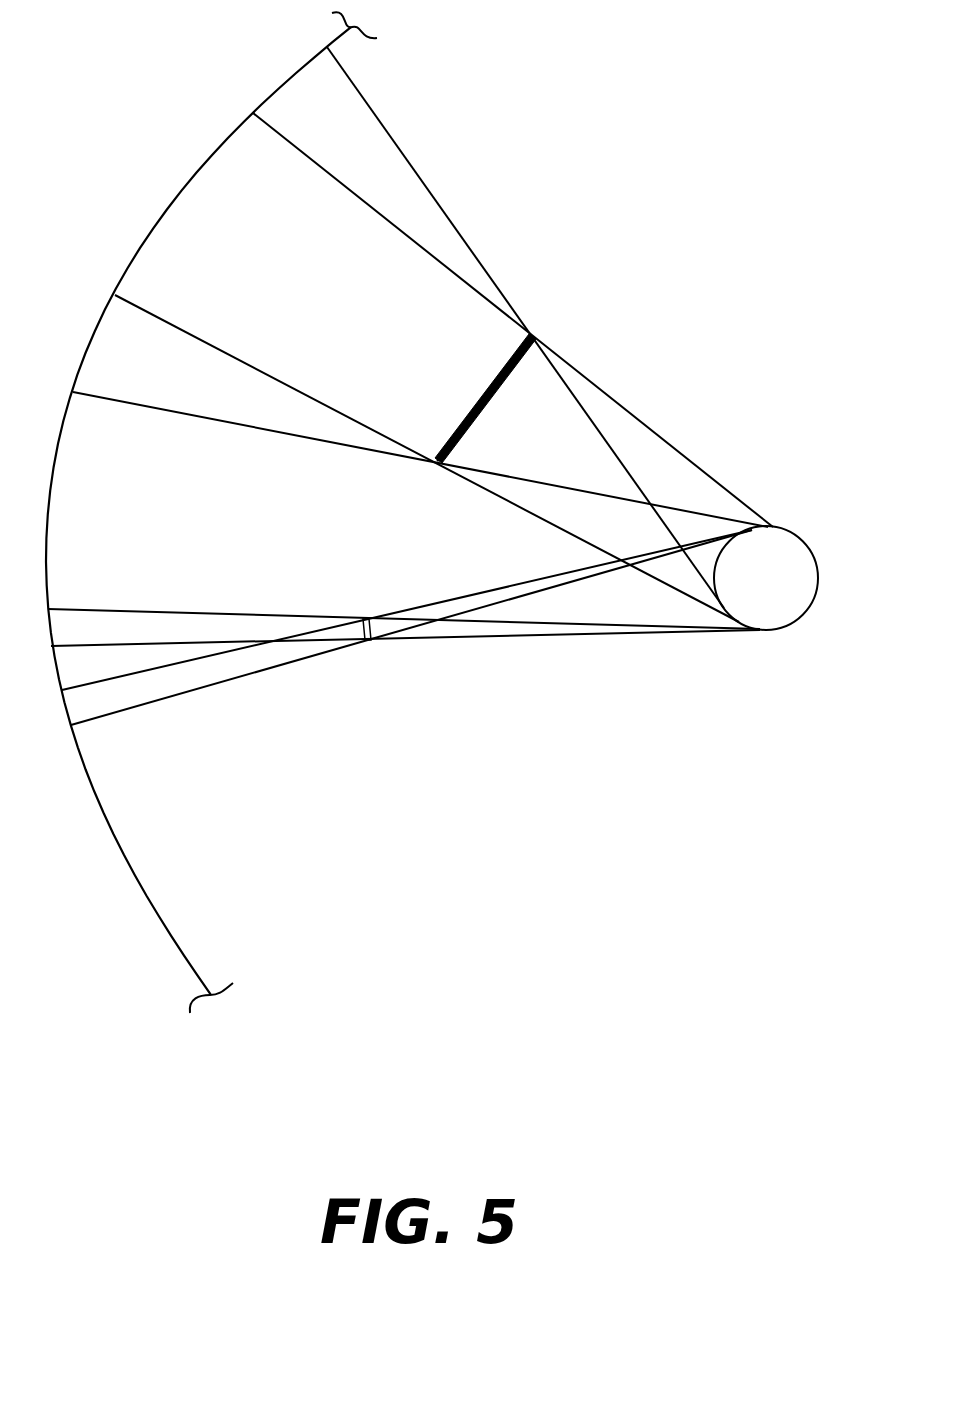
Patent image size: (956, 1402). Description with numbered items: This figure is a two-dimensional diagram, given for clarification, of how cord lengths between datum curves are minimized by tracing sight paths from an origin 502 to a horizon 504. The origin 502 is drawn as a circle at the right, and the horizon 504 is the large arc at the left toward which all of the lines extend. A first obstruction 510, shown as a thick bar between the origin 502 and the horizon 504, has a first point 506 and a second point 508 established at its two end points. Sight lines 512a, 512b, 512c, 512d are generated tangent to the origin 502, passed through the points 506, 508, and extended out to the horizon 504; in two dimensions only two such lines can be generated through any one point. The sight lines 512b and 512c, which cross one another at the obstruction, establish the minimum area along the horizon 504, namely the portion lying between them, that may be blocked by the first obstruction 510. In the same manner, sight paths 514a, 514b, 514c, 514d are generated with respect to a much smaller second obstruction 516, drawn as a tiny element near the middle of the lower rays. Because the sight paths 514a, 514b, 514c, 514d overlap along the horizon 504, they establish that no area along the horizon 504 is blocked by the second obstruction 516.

The origin 502 is at (793, 607).
The horizon 504 is at (156, 221).
The first point 506 is at (532, 337).
The second point 508 is at (438, 462).
The first obstruction 510 is at (495, 378).
The sight line 512a is at (360, 90).
The sight line 512b is at (258, 113).
The sight line 512c is at (250, 363).
The sight line 512d is at (150, 405).
The sight path 514a is at (177, 610).
The sight path 514b is at (75, 645).
The sight path 514c is at (200, 660).
The sight path 514d is at (118, 712).
The second obstruction 516 is at (368, 642).